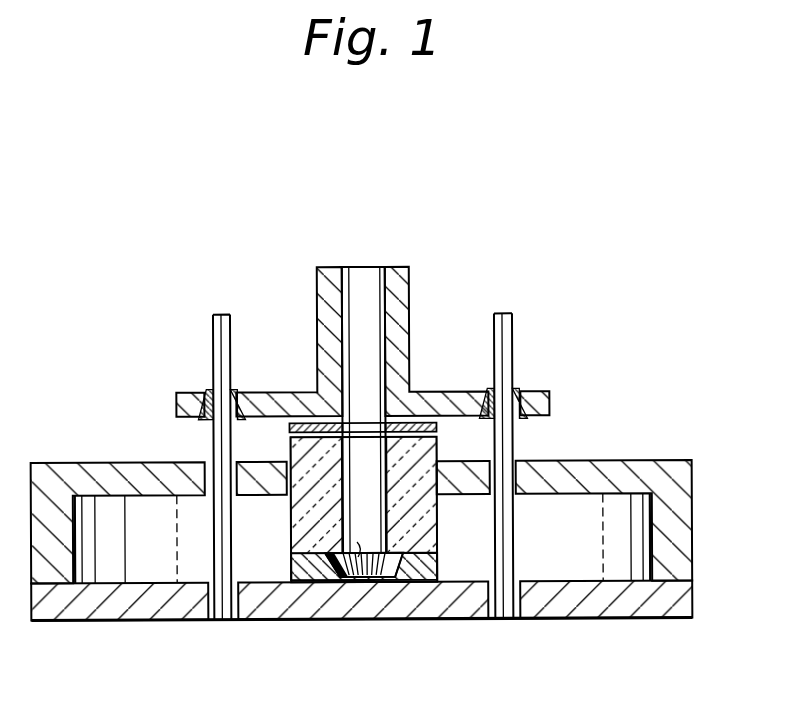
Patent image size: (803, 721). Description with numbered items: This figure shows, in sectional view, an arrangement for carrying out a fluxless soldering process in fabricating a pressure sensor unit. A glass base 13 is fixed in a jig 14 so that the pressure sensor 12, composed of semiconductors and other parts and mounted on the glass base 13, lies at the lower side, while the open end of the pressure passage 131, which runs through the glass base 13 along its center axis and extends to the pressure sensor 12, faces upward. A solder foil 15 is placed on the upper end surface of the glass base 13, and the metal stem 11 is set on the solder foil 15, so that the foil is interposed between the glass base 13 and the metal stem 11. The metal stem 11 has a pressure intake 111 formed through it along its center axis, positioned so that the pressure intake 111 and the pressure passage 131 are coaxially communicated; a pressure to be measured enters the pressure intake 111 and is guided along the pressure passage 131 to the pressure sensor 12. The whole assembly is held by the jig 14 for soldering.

The metal stem 11 is at (400, 287).
The pressure intake 111 is at (365, 282).
The pressure sensor 12 is at (430, 567).
The glass base 13 is at (300, 462).
The pressure passage 131 is at (362, 546).
The jig 14 is at (680, 517).
The solder foil 15 is at (437, 426).